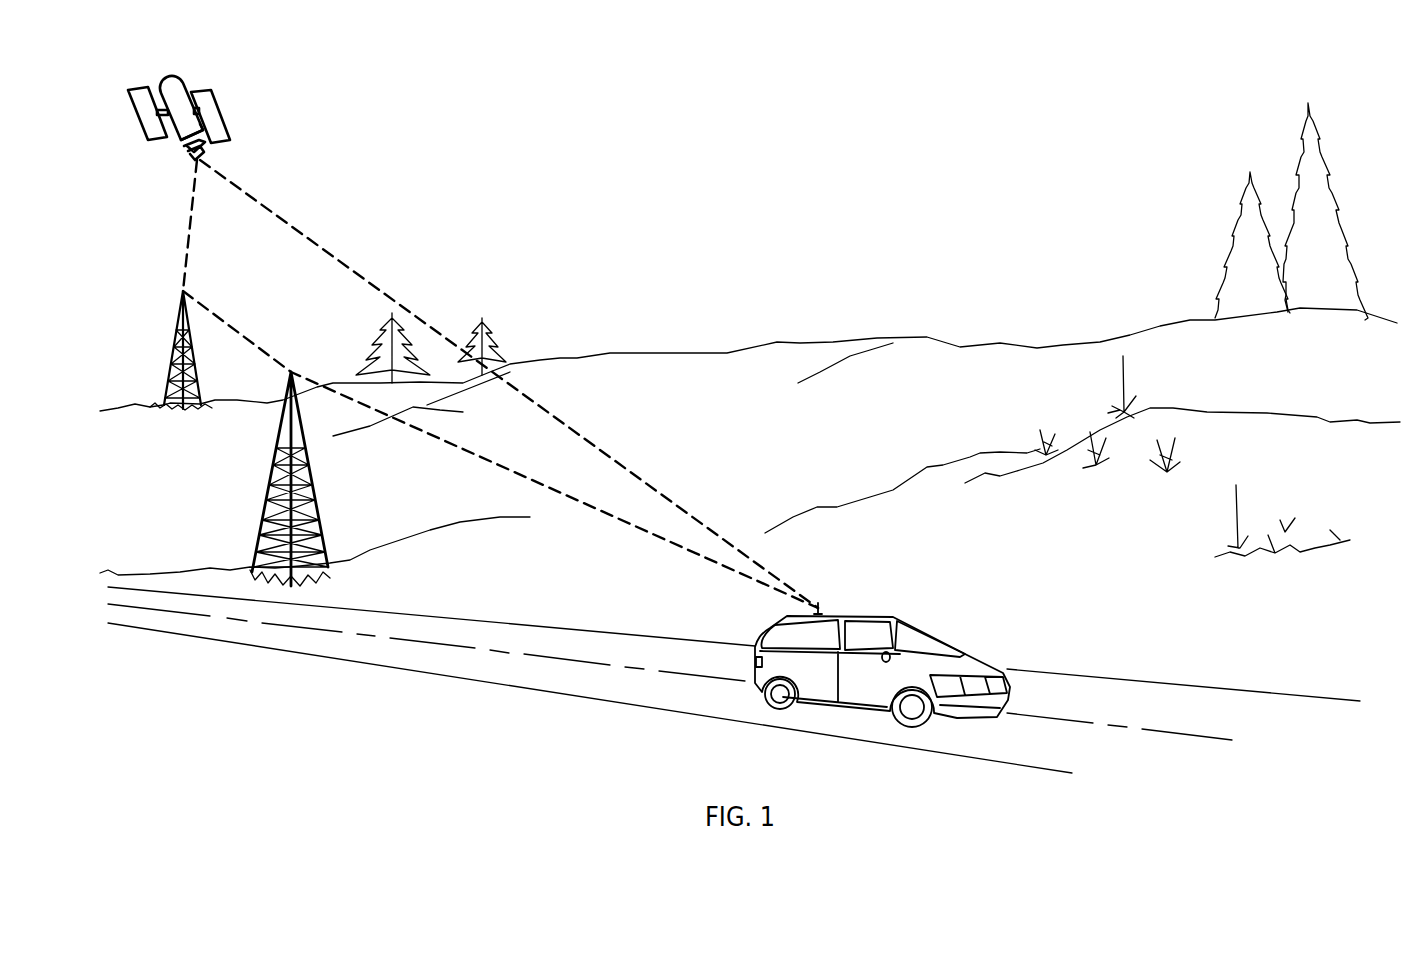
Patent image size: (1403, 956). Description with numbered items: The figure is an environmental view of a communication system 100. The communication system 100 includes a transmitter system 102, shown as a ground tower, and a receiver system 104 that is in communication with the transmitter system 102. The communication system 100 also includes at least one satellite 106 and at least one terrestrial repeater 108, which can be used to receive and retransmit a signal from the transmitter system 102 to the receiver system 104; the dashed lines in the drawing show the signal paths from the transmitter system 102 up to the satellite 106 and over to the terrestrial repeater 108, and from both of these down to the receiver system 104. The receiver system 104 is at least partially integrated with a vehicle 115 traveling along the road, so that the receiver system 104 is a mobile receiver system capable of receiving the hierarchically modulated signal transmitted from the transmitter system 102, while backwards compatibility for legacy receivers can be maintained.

The communication system 100 is at (777, 143).
The transmitter system 102 is at (177, 326).
The receiver system 104 is at (820, 608).
The satellite 106 is at (211, 111).
The terrestrial repeater 108 is at (272, 461).
The vehicle 115 is at (934, 645).